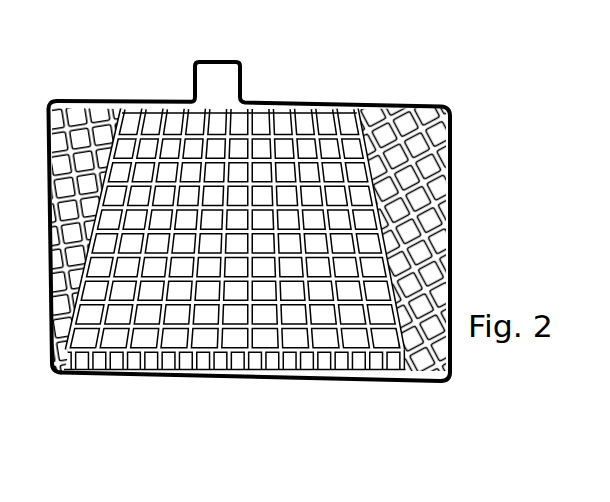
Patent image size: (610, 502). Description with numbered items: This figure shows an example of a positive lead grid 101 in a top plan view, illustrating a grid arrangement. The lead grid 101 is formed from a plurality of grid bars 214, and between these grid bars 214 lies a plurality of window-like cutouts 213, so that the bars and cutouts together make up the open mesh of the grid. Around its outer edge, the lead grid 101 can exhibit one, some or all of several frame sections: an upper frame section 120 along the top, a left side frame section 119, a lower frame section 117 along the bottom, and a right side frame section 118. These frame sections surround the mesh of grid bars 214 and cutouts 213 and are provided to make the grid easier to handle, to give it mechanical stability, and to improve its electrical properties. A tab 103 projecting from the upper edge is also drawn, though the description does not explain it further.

The positive lead grid 101 is at (311, 210).
The tab 103 is at (225, 78).
The lower frame section 117 is at (237, 376).
The right side frame section 118 is at (452, 262).
The left side frame section 119 is at (48, 242).
The upper frame section 120 is at (130, 100).
The window-like cutouts 213 is at (405, 199).
The grid bars 214 is at (383, 205).